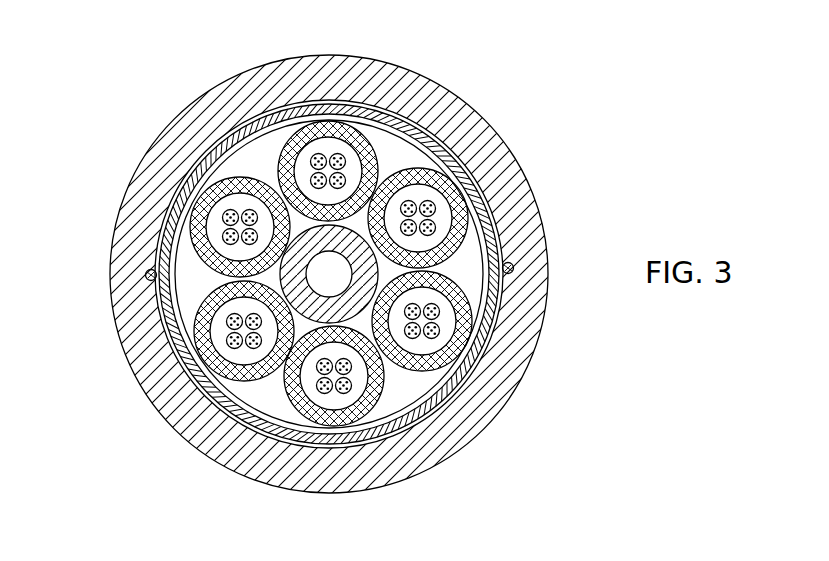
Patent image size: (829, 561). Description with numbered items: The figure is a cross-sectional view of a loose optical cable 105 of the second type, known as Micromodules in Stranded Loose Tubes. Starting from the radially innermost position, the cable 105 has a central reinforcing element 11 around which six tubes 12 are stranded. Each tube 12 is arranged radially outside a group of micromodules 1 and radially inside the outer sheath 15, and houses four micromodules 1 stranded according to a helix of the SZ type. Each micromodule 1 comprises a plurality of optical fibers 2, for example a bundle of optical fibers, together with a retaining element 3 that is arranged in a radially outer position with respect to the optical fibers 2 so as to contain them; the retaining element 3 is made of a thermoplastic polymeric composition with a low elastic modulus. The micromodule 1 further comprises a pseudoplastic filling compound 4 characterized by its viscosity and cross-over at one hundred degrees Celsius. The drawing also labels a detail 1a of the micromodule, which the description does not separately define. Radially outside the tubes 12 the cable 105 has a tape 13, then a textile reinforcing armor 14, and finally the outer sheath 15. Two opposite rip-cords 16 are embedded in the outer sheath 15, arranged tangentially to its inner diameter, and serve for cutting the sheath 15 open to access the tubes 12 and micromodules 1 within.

The micromodule 1 is at (322, 178).
The conductor 1a is at (303, 163).
The optical fibers 2 is at (352, 160).
The retaining element 3 is at (332, 157).
The pseudoplastic filling compound 4 is at (358, 151).
The central reinforcing element 11 is at (287, 345).
The tubes 12 is at (283, 176).
The tape 13 is at (481, 349).
The textile reinforcing armor 14 is at (497, 324).
The outer sheath 15 is at (135, 339).
The rip-cords 16 is at (147, 271).
The optical cable 105 is at (133, 381).